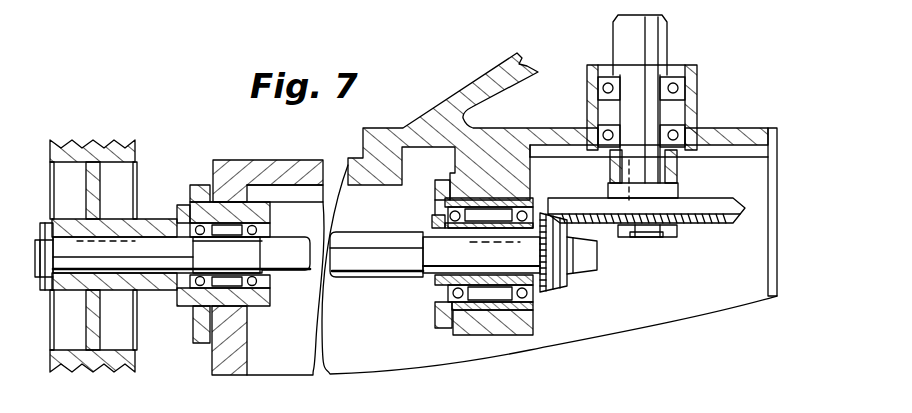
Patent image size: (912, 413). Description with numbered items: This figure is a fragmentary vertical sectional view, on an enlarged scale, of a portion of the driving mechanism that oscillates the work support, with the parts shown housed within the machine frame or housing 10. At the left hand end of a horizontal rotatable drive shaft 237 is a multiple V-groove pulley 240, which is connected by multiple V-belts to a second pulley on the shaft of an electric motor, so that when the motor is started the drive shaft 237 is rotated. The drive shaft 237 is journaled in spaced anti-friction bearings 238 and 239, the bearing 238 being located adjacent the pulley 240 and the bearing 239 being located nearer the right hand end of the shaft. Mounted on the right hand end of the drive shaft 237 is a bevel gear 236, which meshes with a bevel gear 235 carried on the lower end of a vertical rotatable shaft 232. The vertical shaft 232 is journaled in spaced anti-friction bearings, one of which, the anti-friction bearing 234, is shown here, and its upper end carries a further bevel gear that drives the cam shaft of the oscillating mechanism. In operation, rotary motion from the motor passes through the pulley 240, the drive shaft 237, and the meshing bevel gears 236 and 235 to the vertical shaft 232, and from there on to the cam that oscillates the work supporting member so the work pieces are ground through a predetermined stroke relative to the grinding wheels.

The housing 10 is at (270, 167).
The vertical rotatable shaft 232 is at (667, 33).
The anti-friction bearing 234 is at (680, 87).
The bevel gear 235 is at (718, 223).
The bevel gear 236 is at (558, 292).
The rotatable drive shaft 237 is at (161, 240).
The anti-friction bearing 238 is at (263, 306).
The anti-friction bearing 239 is at (462, 337).
The multiple V-groove pulley 240 is at (100, 140).